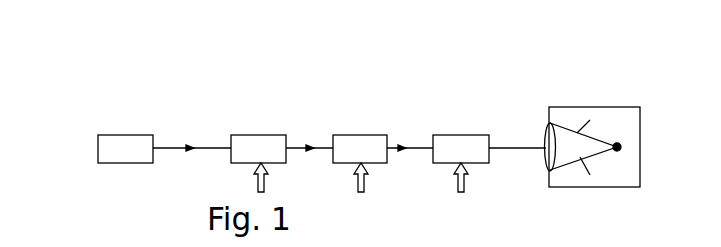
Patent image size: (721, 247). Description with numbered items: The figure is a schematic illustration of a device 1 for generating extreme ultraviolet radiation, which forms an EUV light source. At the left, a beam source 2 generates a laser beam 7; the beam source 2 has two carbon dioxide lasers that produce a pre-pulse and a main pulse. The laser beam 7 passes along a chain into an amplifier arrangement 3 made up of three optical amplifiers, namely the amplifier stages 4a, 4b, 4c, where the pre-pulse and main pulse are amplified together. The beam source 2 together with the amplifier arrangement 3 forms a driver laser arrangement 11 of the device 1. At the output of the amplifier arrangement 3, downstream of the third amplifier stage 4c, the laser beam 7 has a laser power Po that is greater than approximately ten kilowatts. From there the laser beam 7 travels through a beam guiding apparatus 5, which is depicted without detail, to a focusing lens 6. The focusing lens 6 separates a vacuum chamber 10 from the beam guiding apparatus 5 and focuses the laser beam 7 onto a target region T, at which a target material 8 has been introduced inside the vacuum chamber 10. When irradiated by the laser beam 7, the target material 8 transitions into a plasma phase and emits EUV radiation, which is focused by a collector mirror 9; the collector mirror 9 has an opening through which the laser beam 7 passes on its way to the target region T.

The device for generating EUV radiation 1 is at (104, 106).
The beam source 2 is at (126, 149).
The amplifier arrangement 3 is at (498, 110).
The first amplifier stage 4a is at (261, 148).
The second amplifier stage 4b is at (362, 148).
The third amplifier stage 4c is at (462, 148).
The beam guiding apparatus 5 is at (516, 151).
The focusing lens 6 is at (548, 137).
The laser beam 7 is at (567, 140).
The target material 8 is at (622, 148).
The collector mirror 9 is at (585, 172).
The vacuum chamber 10 is at (642, 150).
The driver laser arrangement 11 is at (498, 76).
The laser power Po is at (503, 144).
The target region T is at (617, 140).